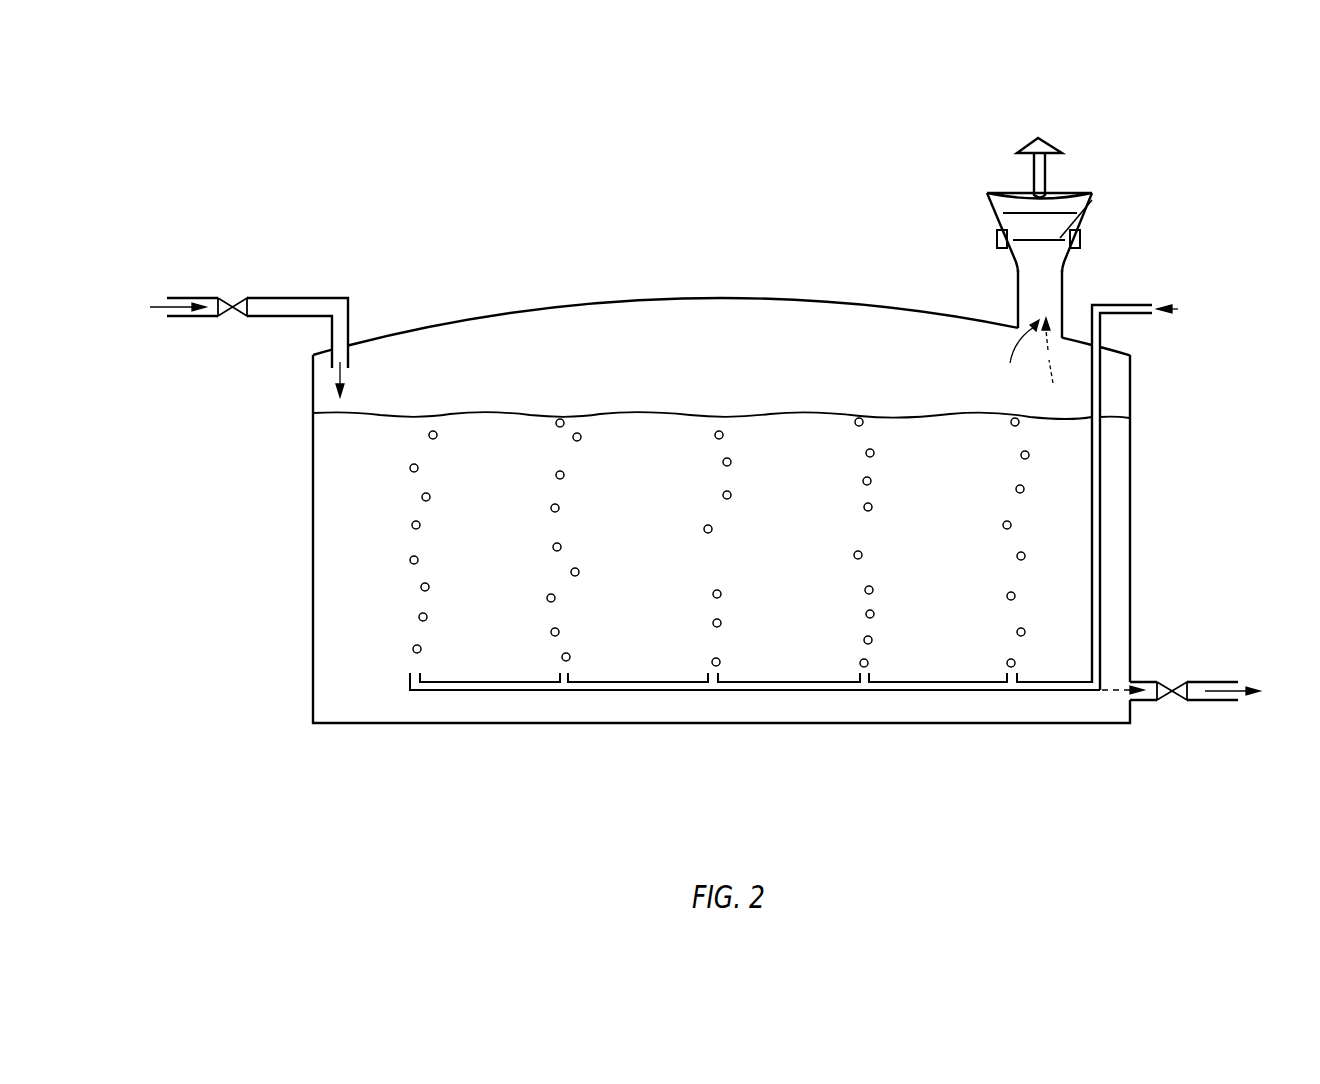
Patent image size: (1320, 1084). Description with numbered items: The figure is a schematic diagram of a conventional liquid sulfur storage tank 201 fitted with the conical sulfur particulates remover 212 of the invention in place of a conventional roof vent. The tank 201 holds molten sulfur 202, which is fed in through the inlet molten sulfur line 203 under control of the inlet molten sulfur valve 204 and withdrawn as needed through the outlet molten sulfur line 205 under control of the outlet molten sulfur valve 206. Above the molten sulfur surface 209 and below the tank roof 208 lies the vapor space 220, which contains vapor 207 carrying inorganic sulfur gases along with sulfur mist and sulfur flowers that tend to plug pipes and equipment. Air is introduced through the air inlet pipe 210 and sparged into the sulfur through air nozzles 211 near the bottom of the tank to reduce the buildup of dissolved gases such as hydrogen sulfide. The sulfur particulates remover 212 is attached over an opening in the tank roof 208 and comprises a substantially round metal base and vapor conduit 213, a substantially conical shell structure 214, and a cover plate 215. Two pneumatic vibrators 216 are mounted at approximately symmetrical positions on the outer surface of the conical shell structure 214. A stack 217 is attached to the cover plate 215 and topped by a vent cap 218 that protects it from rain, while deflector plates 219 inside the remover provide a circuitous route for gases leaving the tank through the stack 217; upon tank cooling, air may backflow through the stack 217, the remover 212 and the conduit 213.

The liquid sulfur storage tank 201 is at (313, 472).
The molten sulfur 202 is at (355, 641).
The inlet molten sulfur line 203 is at (185, 297).
The inlet molten sulfur valve 204 is at (223, 298).
The outlet molten sulfur line 205 is at (1218, 703).
The outlet molten sulfur valve 206 is at (1160, 681).
The vapor 207 is at (658, 330).
The tank roof 208 is at (714, 298).
The molten sulfur surface 209 is at (923, 418).
The air inlet pipe 210 is at (1103, 325).
The air nozzles 211 is at (559, 678).
The conical sulfur particulates remover 212 is at (1092, 200).
The metal base and vapor conduit 213 is at (1065, 315).
The conical shell structure 214 is at (1068, 258).
The cover plate 215 is at (1007, 190).
The pneumatic vibrators 216 is at (997, 238).
The stack 217 is at (1030, 177).
The vent cap 218 is at (1052, 140).
The deflector plates 219 is at (1093, 204).
The vapor space 220 is at (588, 336).